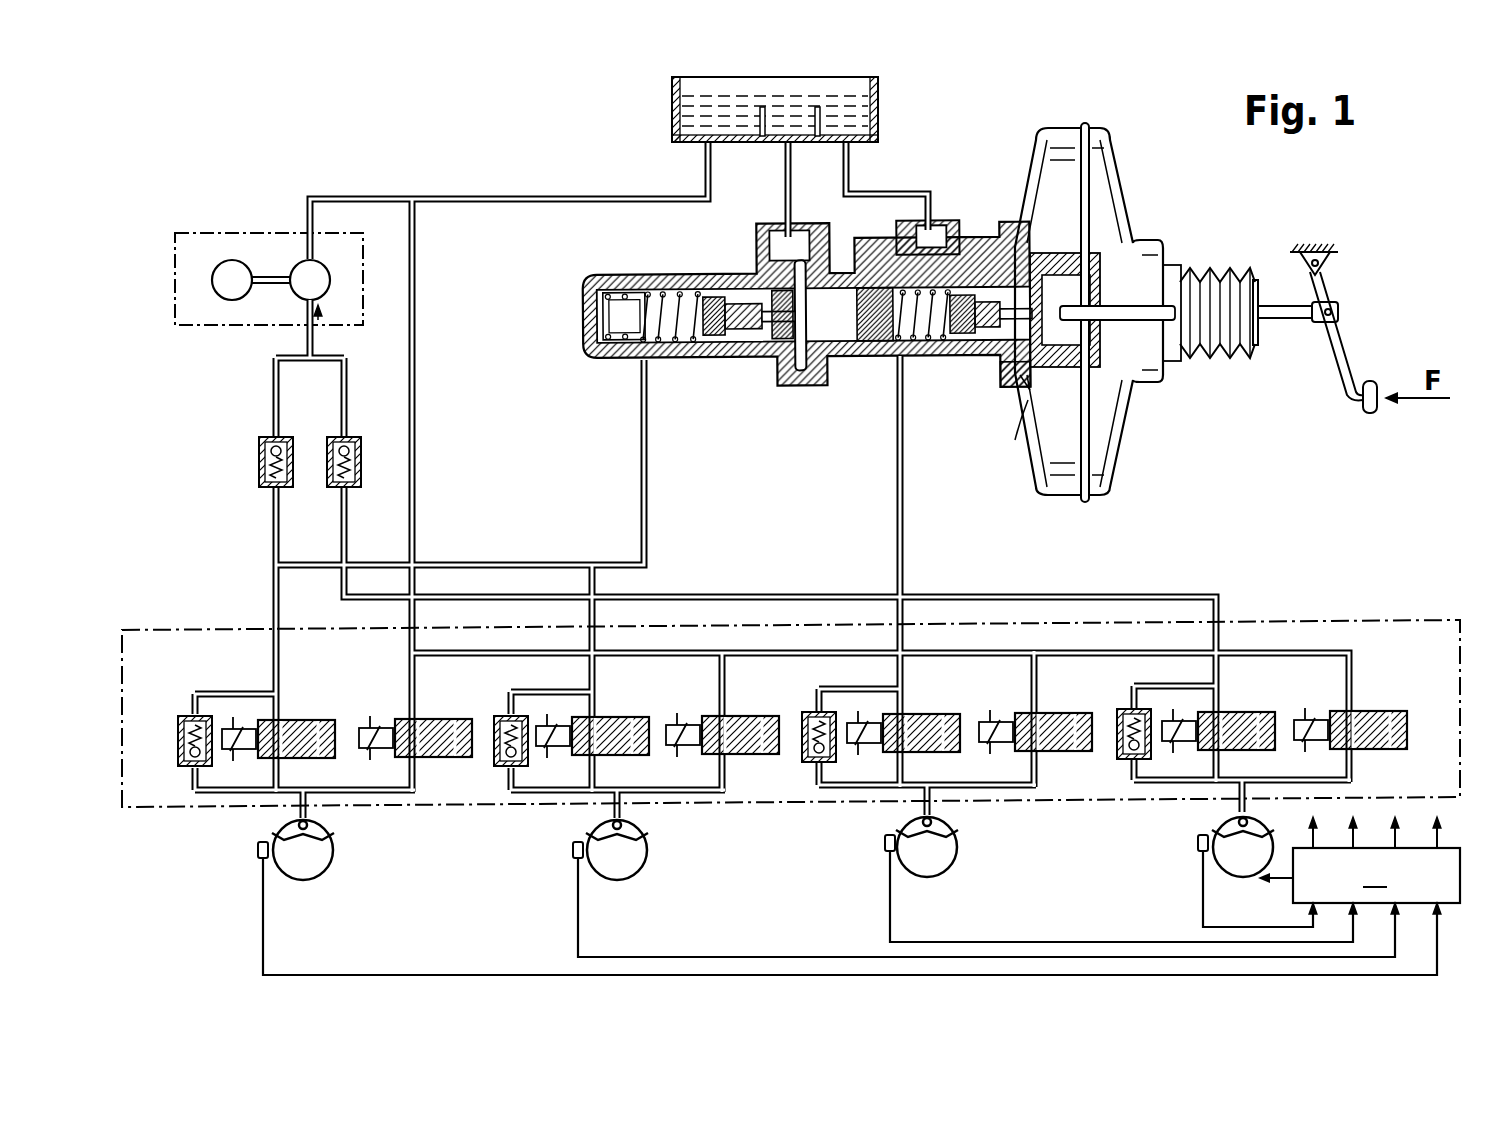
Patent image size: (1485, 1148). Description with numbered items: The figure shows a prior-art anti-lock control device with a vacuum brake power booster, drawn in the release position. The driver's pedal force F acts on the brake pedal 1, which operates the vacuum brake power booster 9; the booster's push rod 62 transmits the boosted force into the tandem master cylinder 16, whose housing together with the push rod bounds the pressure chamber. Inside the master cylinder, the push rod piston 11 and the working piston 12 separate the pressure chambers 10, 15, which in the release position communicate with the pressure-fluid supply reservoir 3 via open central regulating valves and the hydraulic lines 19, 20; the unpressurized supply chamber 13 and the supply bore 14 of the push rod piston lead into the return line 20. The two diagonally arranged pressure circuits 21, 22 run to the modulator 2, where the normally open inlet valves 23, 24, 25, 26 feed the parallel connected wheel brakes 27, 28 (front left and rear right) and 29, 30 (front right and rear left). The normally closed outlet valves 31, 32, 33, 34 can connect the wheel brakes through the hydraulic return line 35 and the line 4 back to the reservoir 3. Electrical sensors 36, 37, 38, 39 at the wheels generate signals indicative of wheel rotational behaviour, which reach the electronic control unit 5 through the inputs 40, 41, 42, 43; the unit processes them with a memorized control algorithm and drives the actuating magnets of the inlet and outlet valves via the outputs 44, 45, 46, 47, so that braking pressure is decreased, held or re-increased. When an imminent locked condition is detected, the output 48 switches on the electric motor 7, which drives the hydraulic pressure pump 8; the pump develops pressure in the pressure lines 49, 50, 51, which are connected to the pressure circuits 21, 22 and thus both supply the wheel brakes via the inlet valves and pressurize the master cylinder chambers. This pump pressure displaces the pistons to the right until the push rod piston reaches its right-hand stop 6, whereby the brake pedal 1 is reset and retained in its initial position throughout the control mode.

The brake pedal 1 is at (1350, 404).
The modulator 2 is at (157, 640).
The pressure-fluid supply reservoir 3 is at (672, 116).
The line 4 is at (417, 525).
The electronic control unit 5 is at (1376, 875).
The right-hand stop 6 is at (1033, 386).
The electric motor 7 is at (212, 283).
The hydraulic pressure pump 8 is at (330, 283).
The vacuum brake power booster 9 is at (1113, 190).
The pressure chamber 10 is at (930, 335).
The push rod piston 11 is at (1020, 377).
The working piston 12 is at (757, 350).
The supply chamber 13 is at (1005, 282).
The supply bore 14 is at (985, 292).
The pressure chamber 15 is at (667, 337).
The tandem master cylinder 16 is at (853, 364).
The hydraulic line 19 is at (785, 172).
The hydraulic line 20 is at (849, 170).
The pressure circuit 21 is at (647, 525).
The pressure circuit 22 is at (903, 525).
The inlet valve 23 is at (290, 722).
The inlet valve 24 is at (615, 719).
The inlet valve 25 is at (915, 716).
The inlet valve 26 is at (1235, 714).
The wheel brake 27 is at (303, 880).
The wheel brake 28 is at (617, 880).
The wheel brake 29 is at (927, 877).
The wheel brake 30 is at (1243, 877).
The outlet valve 31 is at (432, 721).
The outlet valve 32 is at (745, 718).
The outlet valve 33 is at (1055, 715).
The outlet valve 34 is at (1365, 713).
The hydraulic return line 35 is at (812, 650).
The electrical sensor 36 is at (262, 858).
The electrical sensor 37 is at (578, 858).
The electrical sensor 38 is at (888, 852).
The electrical sensor 39 is at (1203, 852).
The input 40 is at (1313, 906).
The input 41 is at (1353, 906).
The input 42 is at (1395, 906).
The input 43 is at (1437, 906).
The output 44 is at (1314, 842).
The output 45 is at (1354, 842).
The output 46 is at (1396, 842).
The output 47 is at (1438, 842).
The output 48 is at (1291, 880).
The pressure line 49 is at (305, 340).
The pressure line 50 is at (273, 526).
The pressure line 51 is at (340, 526).
The push rod 62 is at (1125, 352).